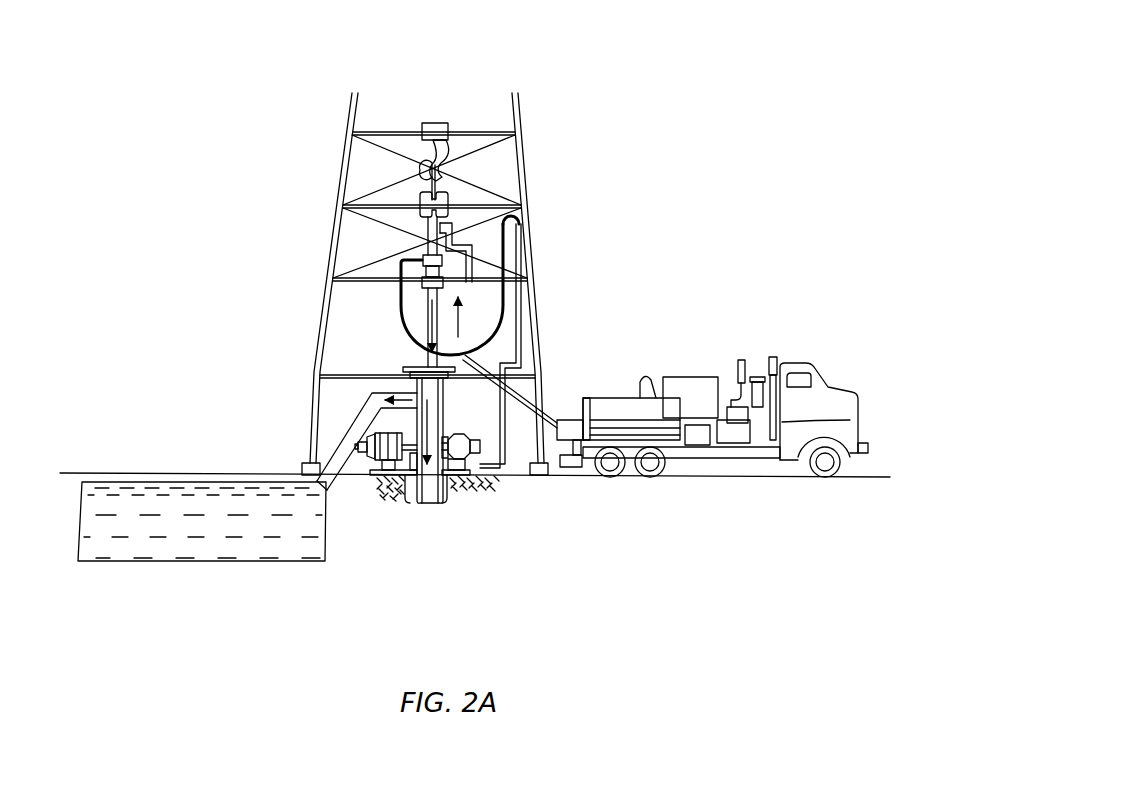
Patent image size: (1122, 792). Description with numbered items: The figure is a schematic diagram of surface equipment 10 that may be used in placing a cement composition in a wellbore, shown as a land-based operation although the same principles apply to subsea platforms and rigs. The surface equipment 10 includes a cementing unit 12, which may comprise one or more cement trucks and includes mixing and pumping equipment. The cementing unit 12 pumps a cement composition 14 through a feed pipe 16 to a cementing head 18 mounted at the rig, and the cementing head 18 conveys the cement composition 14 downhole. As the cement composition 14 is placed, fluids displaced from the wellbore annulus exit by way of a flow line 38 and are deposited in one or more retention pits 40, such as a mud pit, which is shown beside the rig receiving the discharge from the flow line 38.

The surface equipment 10 is at (755, 133).
The cementing unit 12 is at (762, 466).
The cement composition 14 is at (427, 313).
The feed pipe 16 is at (513, 393).
The cementing head 18 is at (465, 196).
The flow line 38 is at (348, 463).
The retention pit 40 is at (128, 562).